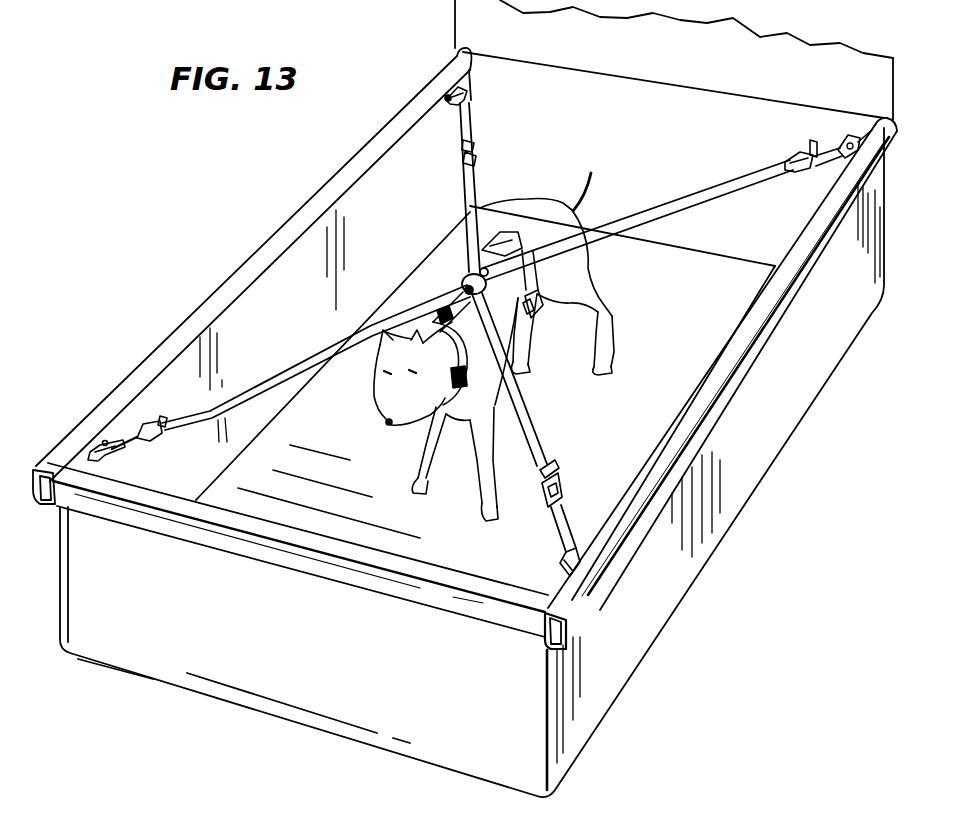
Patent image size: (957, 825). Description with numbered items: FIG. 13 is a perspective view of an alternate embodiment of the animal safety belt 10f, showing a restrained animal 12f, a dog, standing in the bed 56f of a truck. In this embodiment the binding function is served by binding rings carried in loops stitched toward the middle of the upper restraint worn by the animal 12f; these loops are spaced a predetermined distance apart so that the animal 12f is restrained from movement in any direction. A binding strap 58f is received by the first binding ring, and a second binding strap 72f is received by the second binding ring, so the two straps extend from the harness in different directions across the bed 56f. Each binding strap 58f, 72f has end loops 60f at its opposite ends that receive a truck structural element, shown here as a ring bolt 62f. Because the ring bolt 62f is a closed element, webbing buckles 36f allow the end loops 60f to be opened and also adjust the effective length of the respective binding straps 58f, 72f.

The animal safety belt 10f is at (405, 265).
The animal 12f is at (561, 228).
The webbing buckle 36f is at (475, 138).
The bed 56f is at (354, 450).
The binding strap 58f is at (714, 192).
The end loop 60f is at (468, 103).
The ring bolt 62f is at (850, 124).
The second binding strap 72f is at (525, 421).